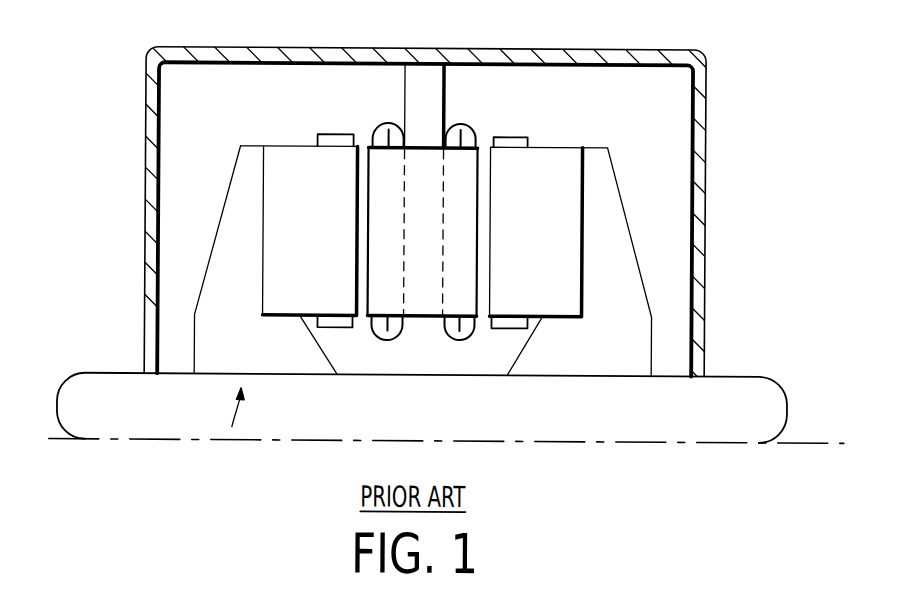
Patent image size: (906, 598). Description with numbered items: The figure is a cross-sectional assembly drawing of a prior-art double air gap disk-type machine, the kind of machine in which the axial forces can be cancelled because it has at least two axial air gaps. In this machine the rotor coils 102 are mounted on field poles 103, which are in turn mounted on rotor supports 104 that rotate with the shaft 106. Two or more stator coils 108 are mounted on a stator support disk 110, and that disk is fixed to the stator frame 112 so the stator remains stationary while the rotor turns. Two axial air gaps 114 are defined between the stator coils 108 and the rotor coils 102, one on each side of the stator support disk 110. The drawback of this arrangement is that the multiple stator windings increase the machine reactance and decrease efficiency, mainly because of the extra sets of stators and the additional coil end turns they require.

The rotor coils 102 is at (328, 133).
The field poles 103 is at (298, 290).
The rotor supports 104 is at (244, 214).
The shaft 106 is at (736, 393).
The stator coils 108 is at (378, 114).
The stator support disk 110 is at (450, 85).
The stator frame 112 is at (704, 182).
The axial air gaps 114 is at (478, 333).